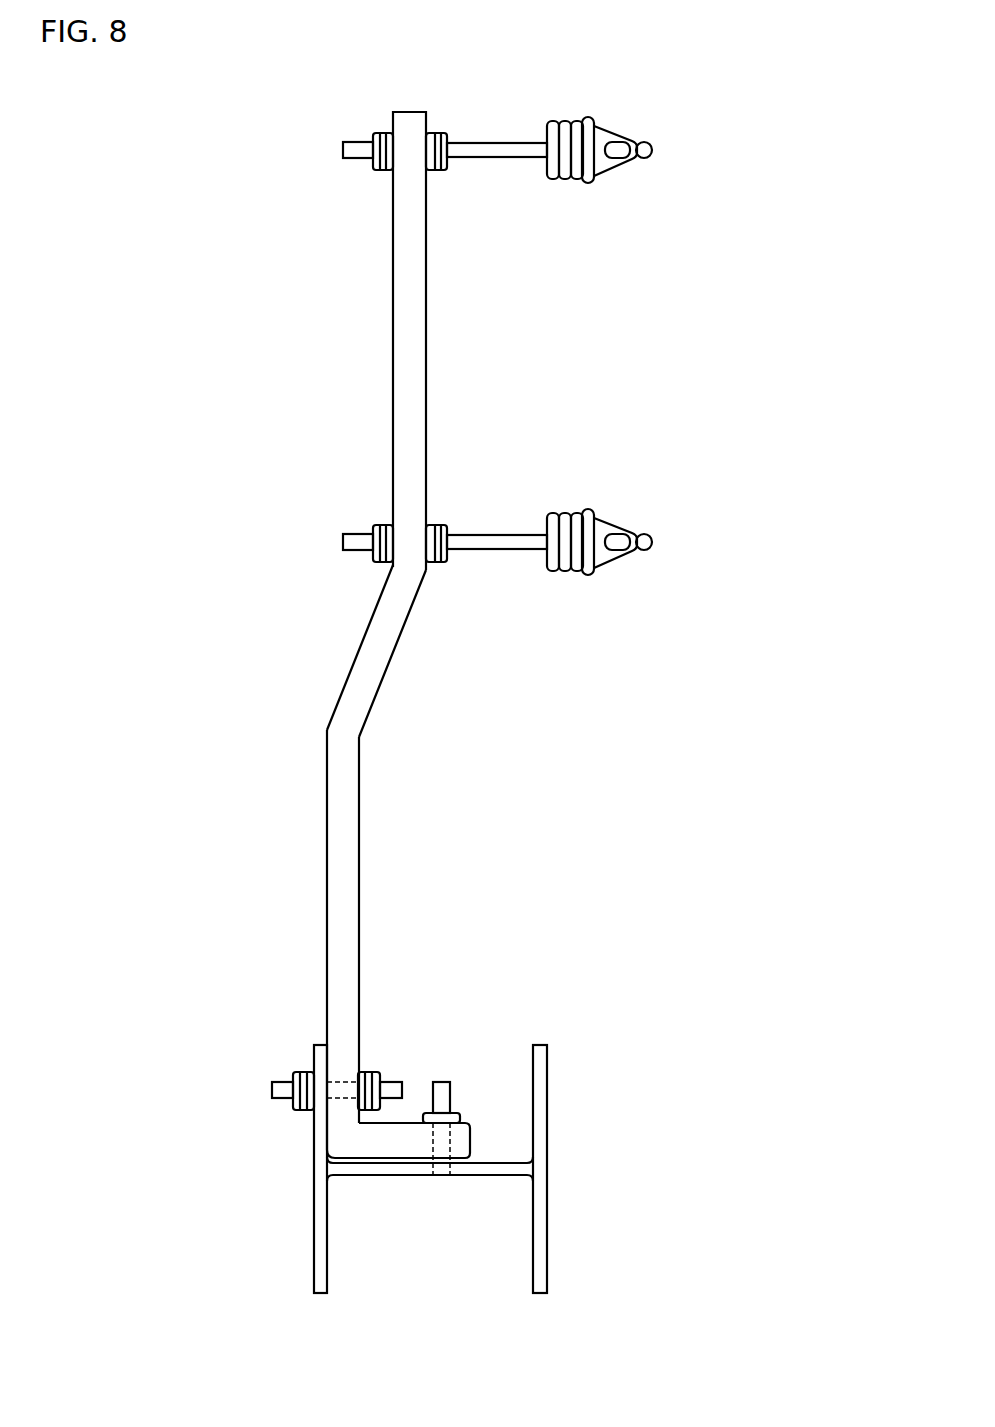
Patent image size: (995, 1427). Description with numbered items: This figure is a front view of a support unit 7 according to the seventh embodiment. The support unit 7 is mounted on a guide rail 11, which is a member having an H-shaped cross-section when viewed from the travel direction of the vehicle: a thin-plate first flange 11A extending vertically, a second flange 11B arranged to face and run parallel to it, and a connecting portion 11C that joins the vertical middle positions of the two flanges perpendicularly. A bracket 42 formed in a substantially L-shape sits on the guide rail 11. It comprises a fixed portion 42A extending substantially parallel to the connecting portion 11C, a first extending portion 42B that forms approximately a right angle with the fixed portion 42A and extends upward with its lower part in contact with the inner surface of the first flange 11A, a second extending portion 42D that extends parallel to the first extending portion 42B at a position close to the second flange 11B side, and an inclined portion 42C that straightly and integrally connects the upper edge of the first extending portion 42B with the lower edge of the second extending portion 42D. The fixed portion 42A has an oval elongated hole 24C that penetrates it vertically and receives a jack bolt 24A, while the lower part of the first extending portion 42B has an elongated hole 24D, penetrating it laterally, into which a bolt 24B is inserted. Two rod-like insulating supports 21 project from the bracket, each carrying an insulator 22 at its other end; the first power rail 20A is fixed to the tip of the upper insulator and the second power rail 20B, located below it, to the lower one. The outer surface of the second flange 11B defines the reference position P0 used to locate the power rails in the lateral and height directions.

The support unit 7 is at (199, 186).
The guide rail 11 is at (313, 1283).
The first flange 11A is at (313, 1137).
The second flange 11B is at (548, 1213).
The connecting portion 11C is at (498, 1167).
The first power rail 20A is at (648, 160).
The second power rail 20B is at (648, 550).
The insulating support 21 is at (603, 96).
The insulator 22 is at (557, 184).
The jack bolt 24A is at (450, 1097).
The bolt 24B is at (272, 1090).
The elongated hole 24C is at (440, 1140).
The elongated hole 24D is at (345, 1088).
The bracket 42 is at (402, 298).
The fixed portion 42A is at (410, 1128).
The first extending portion 42B is at (327, 828).
The inclined portion 42C is at (366, 627).
The second extending portion 42D is at (402, 385).
The reference position P0 is at (548, 1232).